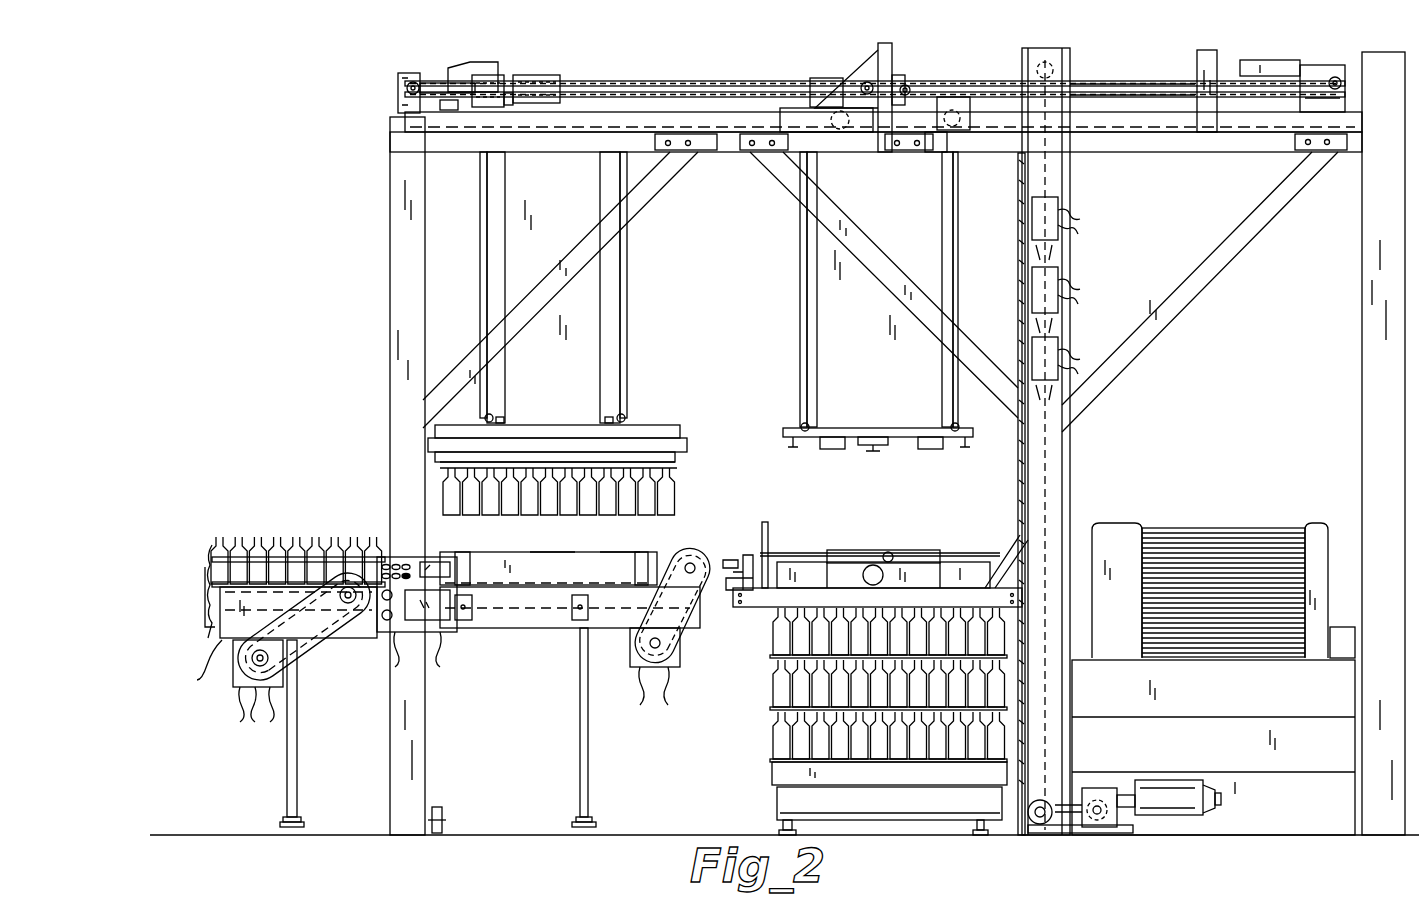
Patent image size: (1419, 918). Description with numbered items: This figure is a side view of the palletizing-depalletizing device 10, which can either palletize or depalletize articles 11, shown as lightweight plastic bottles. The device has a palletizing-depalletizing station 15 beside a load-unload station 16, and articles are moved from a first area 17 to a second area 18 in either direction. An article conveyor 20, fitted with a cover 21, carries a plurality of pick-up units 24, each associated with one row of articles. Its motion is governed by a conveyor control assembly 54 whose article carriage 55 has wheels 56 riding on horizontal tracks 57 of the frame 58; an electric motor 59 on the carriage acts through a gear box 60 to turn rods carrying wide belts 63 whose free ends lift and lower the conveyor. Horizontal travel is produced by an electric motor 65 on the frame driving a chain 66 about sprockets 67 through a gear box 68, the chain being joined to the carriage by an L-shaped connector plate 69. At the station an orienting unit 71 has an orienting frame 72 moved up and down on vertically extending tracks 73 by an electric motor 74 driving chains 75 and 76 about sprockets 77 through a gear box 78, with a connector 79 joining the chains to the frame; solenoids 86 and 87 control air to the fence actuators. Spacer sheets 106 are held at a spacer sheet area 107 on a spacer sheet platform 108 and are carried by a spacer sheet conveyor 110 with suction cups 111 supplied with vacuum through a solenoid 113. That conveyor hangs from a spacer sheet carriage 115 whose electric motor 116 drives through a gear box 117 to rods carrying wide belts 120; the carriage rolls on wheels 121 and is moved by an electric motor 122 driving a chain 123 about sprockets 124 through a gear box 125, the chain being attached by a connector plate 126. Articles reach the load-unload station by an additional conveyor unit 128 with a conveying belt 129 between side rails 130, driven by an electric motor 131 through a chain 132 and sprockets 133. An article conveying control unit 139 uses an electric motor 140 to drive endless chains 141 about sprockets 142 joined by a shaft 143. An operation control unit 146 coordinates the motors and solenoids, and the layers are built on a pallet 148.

The palletizing-depalletizing device 10 is at (290, 410).
The articles 11 is at (504, 658).
The palletizing-depalletizing station 15 is at (870, 547).
The load-unload station 16 is at (478, 548).
The first area 17 is at (636, 548).
The second area 18 is at (859, 657).
The article conveyor 20 is at (577, 333).
The cover 21 is at (680, 438).
The pick-up units 24 is at (570, 462).
The conveyor control assembly 54 is at (601, 109).
The article carriage 55 is at (510, 106).
The wheels 56 is at (650, 95).
The horizontal tracks 57 is at (705, 120).
The frame 58 is at (392, 160).
The electric motor 59 is at (560, 78).
The gear box 60 is at (500, 75).
The wide belt 63 is at (482, 248).
The electric motor 65 is at (470, 62).
The chain 66 is at (450, 85).
The sprockets 67 is at (400, 88).
The gear box 68 is at (398, 96).
The L-shaped connector plate 69 is at (448, 110).
The orienting unit 71 is at (745, 540).
The orienting frame 72 is at (810, 600).
The vertically extending tracks 73 is at (1044, 459).
The electric motor 74 is at (1175, 805).
The chain 75 is at (1075, 815).
The chains 76 is at (1020, 490).
The sprockets 77 is at (1025, 158).
The gear box 78 is at (1135, 750).
The connector 79 is at (1010, 560).
The solenoid 86 is at (1058, 345).
The solenoid 87 is at (1058, 278).
The spacer sheets 106 is at (1272, 528).
The spacer sheet area 107 is at (1195, 500).
The spacer sheet platform 108 is at (1338, 655).
The spacer sheet conveyor 110 is at (872, 316).
The suction cups 111 is at (795, 450).
The solenoid 113 is at (1058, 205).
The spacer sheet carriage 115 is at (1064, 231).
The electric motor 116 is at (880, 105).
The gear box 117 is at (838, 55).
The wide belt 120 is at (802, 265).
The wheels 121 is at (945, 160).
The electric motor 122 is at (1282, 60).
The chain 123 is at (1138, 80).
The sprockets 124 is at (910, 85).
The gear box 125 is at (1342, 65).
The connector plate 126 is at (940, 130).
The additional conveyor unit 128 is at (267, 640).
The conveying belt 129 is at (225, 588).
The side rails 130 is at (218, 545).
The electric motor 131 is at (245, 700).
The chain 132 is at (308, 645).
The sprockets 133 is at (360, 625).
The article conveying control unit 139 is at (566, 548).
The electric motor 140 is at (668, 613).
The endless chains 141 is at (672, 645).
The sprockets 142 is at (700, 555).
The shaft 143 is at (698, 575).
The operation control unit 146 is at (450, 628).
The pallet 148 is at (775, 772).